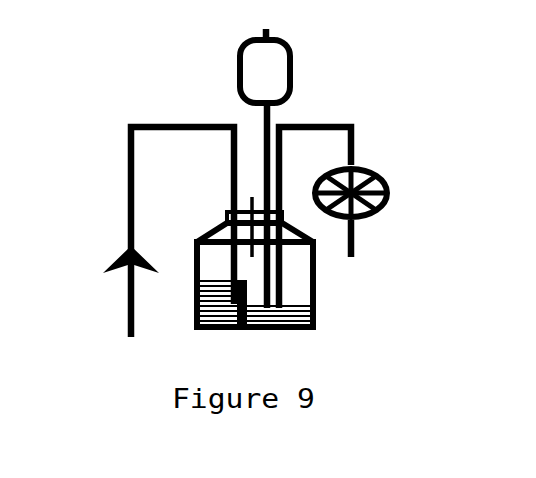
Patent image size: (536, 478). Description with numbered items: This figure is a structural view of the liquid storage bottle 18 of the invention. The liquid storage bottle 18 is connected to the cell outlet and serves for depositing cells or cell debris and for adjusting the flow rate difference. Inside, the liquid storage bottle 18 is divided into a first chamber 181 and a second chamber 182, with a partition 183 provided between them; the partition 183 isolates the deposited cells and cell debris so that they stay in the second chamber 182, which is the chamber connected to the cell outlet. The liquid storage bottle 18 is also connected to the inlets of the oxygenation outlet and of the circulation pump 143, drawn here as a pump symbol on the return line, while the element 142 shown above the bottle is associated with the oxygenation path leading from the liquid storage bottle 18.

The liquid storage bottle 18 is at (210, 258).
The pressure gauge 142 is at (264, 72).
The circulation pump 143 is at (356, 165).
The first chamber 181 is at (220, 310).
The second chamber 182 is at (295, 292).
The partition 183 is at (242, 320).